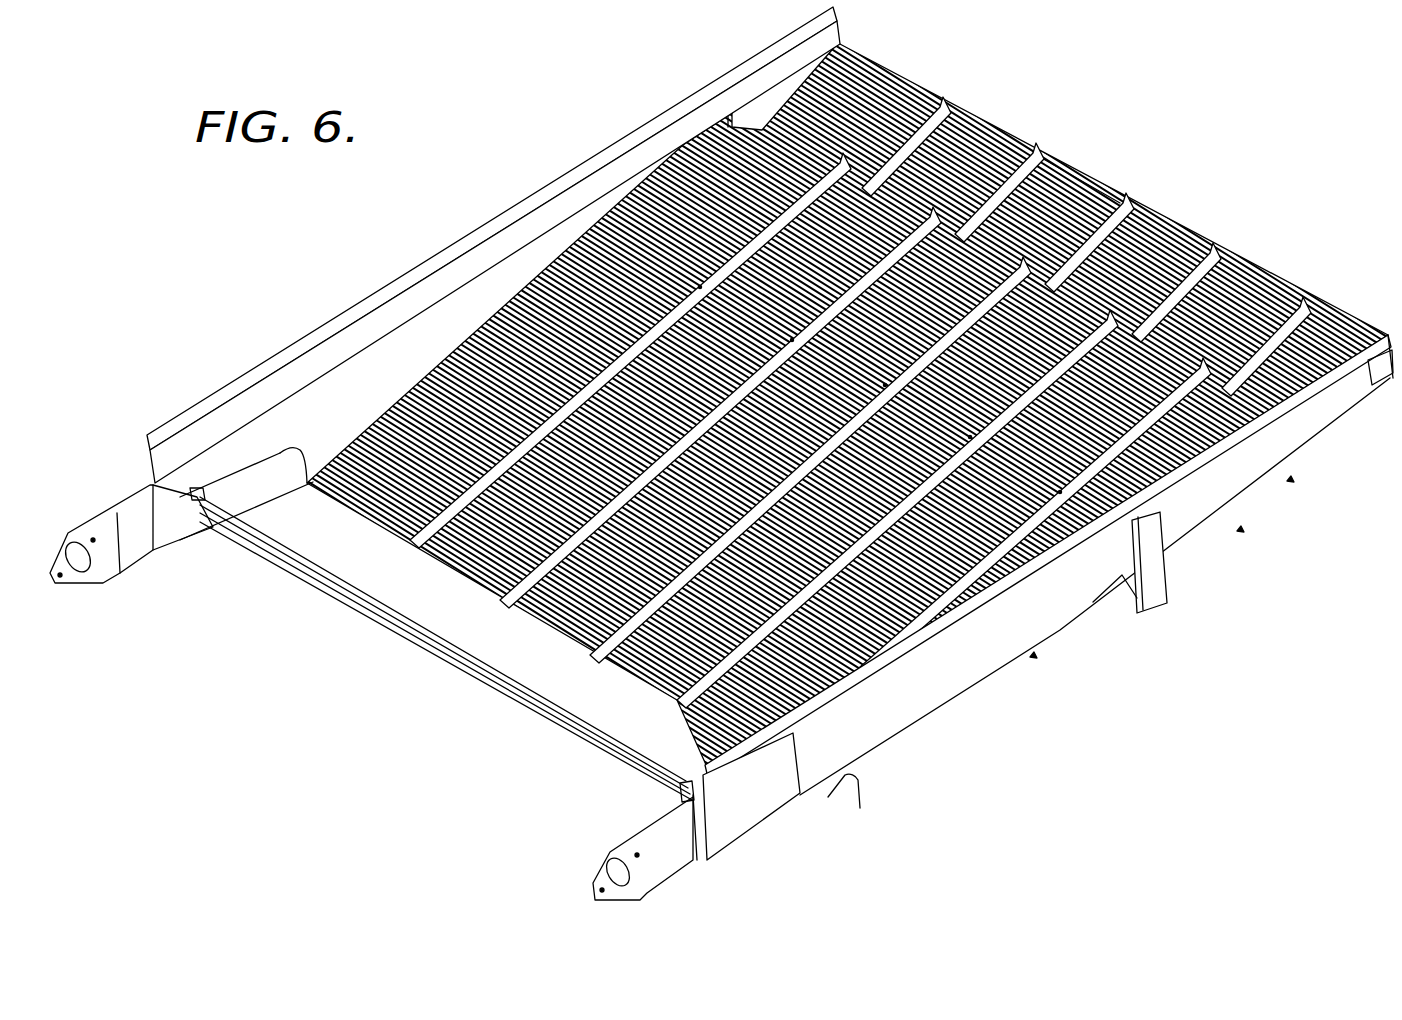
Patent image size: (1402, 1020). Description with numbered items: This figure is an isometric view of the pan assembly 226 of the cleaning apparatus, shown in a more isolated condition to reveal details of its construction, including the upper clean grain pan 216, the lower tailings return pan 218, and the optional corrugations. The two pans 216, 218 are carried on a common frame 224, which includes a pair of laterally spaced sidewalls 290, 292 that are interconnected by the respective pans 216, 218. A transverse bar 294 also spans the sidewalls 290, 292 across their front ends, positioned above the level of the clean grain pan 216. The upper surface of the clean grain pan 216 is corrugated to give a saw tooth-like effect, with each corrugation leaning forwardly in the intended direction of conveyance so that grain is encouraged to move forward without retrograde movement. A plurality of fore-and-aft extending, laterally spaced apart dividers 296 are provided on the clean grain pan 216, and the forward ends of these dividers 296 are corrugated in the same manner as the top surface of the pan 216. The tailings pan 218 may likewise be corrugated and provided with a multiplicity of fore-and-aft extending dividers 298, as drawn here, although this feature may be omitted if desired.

The clean grain pan 216 is at (690, 195).
The tailings pan 218 is at (1068, 190).
The common frame 224 is at (720, 842).
The pan assembly 226 is at (485, 184).
The sidewall 290 is at (360, 350).
The sidewall 292 is at (973, 683).
The transverse bar 294 is at (403, 617).
The dividers 296 is at (566, 380).
The dividers 298 is at (945, 107).